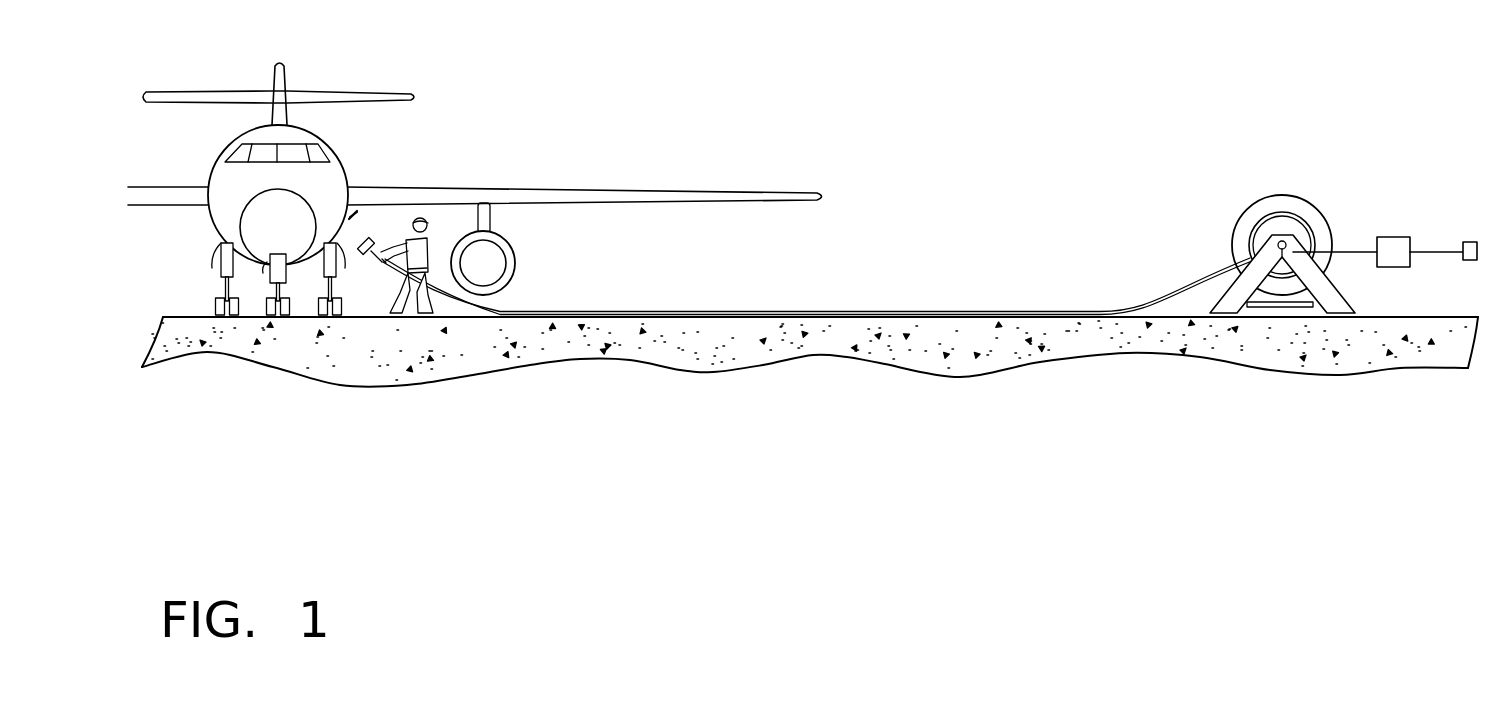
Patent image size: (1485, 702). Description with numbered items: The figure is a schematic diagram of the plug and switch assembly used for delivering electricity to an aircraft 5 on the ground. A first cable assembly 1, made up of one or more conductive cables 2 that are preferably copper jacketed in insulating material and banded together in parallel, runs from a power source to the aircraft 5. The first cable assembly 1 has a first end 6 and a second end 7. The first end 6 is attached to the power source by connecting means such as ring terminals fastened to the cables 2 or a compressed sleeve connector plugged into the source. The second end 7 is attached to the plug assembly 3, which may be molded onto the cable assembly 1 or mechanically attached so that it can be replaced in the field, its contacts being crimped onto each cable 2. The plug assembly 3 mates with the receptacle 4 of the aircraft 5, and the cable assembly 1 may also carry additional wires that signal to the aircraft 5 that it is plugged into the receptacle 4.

The first cable assembly 1 is at (993, 316).
The conductive cable 2 is at (735, 313).
The plug assembly 3 is at (372, 253).
The receptacle 4 is at (350, 220).
The aircraft 5 is at (233, 144).
The first end 6 is at (1470, 240).
The second end 7 is at (385, 259).